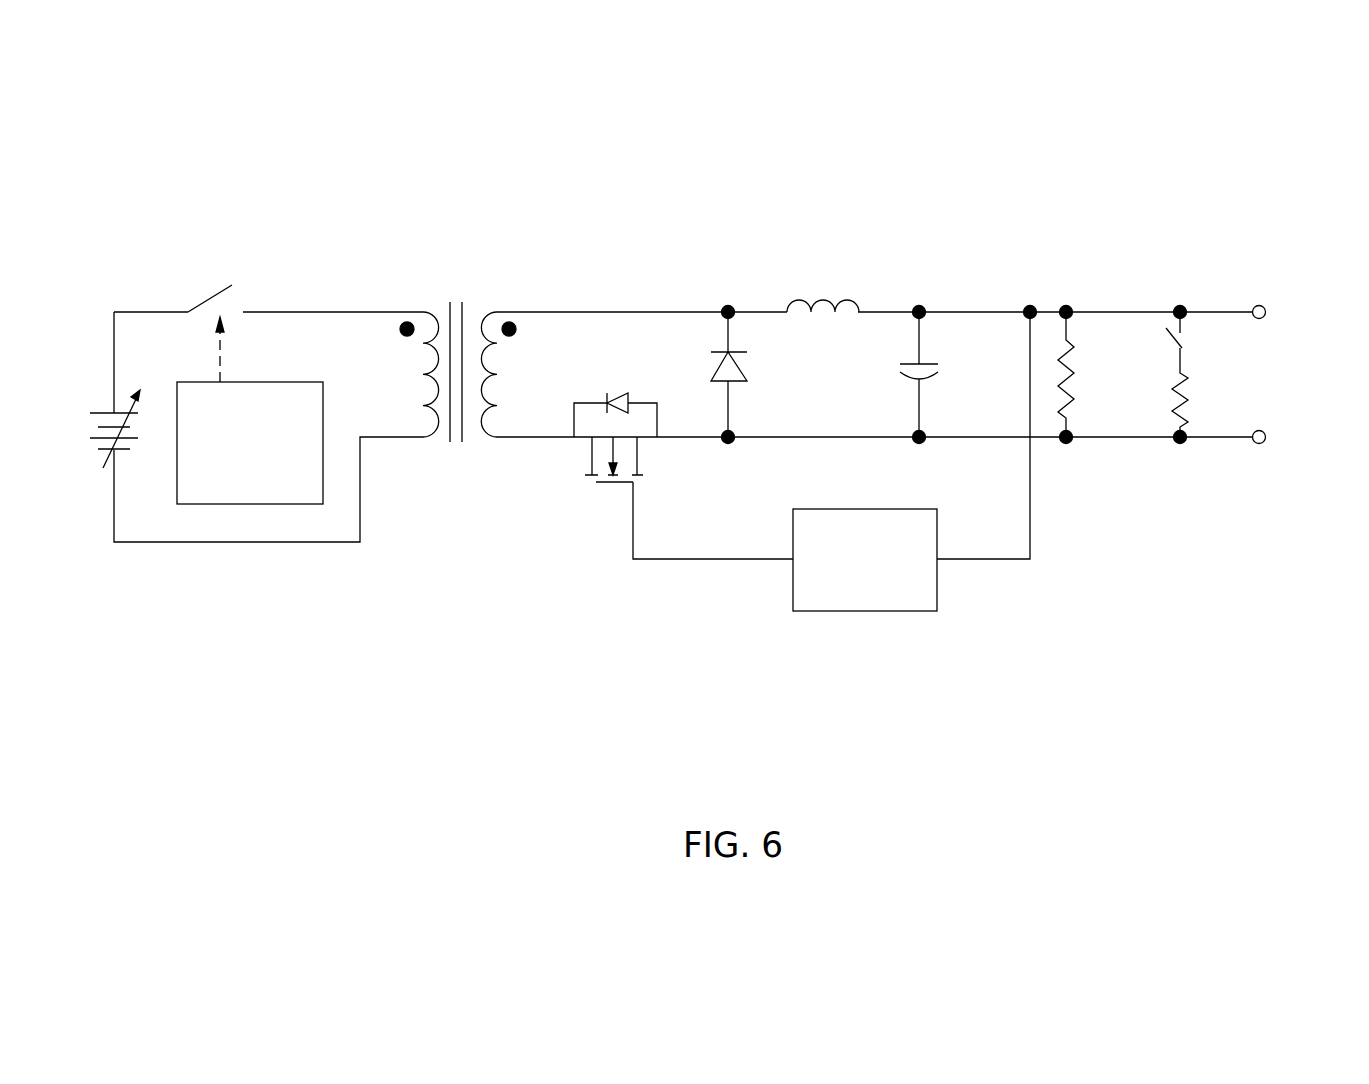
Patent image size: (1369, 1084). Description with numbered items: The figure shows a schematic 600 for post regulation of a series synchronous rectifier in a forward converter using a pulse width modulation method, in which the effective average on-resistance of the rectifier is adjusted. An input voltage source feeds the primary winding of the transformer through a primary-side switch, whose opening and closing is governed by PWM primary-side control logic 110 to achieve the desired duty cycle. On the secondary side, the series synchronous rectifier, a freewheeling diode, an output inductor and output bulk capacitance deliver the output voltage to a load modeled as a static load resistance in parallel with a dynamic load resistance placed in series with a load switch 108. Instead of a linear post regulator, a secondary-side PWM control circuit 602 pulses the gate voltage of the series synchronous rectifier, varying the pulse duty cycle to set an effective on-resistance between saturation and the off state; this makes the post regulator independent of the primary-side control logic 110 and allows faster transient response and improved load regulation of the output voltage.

The schematic 600 is at (703, 430).
The primary-side control logic 110 is at (284, 382).
The load switch 108 is at (1182, 350).
The secondary-side PWM control circuit 602 is at (898, 611).